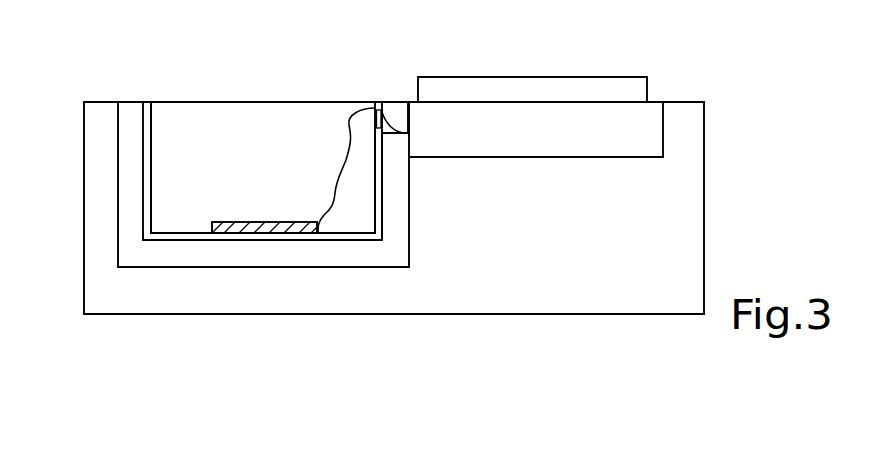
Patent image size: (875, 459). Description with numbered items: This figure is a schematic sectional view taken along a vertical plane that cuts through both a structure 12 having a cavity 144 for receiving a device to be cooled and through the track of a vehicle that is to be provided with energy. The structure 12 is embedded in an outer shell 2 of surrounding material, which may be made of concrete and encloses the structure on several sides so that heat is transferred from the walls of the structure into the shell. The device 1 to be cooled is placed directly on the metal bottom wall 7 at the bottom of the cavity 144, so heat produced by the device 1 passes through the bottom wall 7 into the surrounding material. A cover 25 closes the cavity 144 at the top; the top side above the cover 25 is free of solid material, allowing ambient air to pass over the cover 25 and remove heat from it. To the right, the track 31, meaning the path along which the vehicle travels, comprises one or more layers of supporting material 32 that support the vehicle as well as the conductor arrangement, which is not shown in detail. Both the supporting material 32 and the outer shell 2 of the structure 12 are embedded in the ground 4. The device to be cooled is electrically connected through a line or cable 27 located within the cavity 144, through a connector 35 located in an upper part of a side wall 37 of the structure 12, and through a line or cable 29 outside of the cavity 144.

The device to be cooled 1 is at (229, 222).
The outer shell 2 is at (409, 252).
The ground 4 is at (606, 280).
The bottom wall 7 is at (181, 230).
The structure 12 is at (152, 128).
The cover 25 is at (257, 102).
The line or cable 27 is at (341, 164).
The line or cable 29 is at (397, 110).
The track 31 is at (617, 77).
The supporting material 32 is at (563, 157).
The connector 35 is at (371, 107).
The side wall 37 is at (385, 193).
The cavity 144 is at (281, 156).